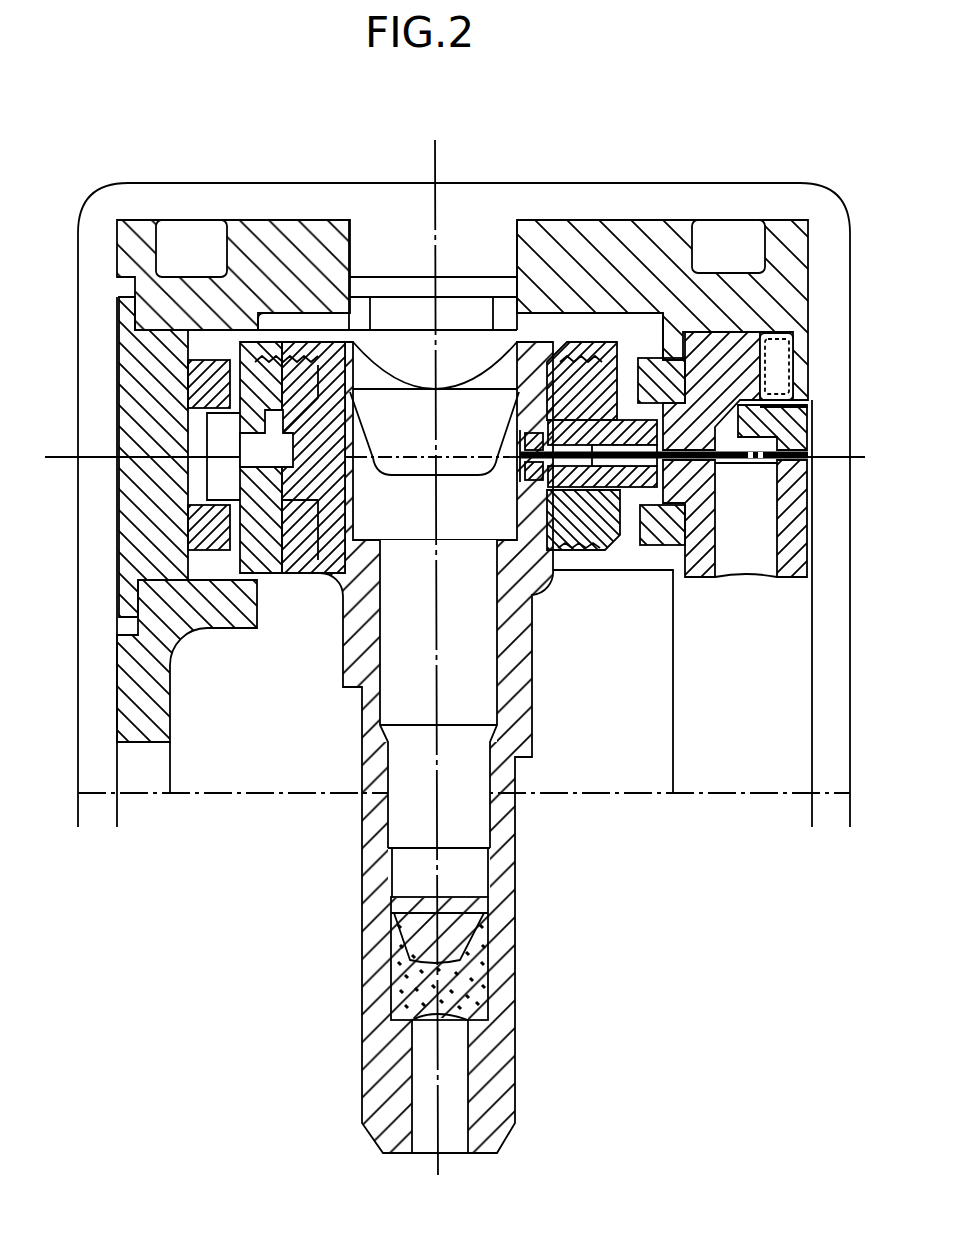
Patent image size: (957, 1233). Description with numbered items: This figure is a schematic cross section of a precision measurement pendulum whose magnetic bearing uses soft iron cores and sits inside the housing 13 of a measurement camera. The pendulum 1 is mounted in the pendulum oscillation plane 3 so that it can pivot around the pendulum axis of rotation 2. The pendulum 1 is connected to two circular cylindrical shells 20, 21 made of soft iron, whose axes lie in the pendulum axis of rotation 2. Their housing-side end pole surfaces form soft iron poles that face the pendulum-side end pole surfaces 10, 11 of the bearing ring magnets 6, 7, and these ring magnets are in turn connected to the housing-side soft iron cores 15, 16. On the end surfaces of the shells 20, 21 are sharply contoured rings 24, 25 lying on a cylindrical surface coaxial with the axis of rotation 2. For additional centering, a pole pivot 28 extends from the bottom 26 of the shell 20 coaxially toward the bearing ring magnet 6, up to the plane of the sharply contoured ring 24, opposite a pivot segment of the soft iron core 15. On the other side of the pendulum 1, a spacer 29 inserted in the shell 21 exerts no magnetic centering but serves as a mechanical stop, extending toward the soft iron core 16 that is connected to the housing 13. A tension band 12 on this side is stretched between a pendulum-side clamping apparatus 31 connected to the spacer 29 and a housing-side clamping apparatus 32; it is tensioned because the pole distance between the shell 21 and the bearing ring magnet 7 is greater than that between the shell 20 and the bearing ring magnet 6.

The pendulum 1 is at (510, 946).
The pendulum axis of rotation 2 is at (250, 458).
The pendulum oscillation plane 3 is at (436, 155).
The bearing ring magnet 6 is at (210, 378).
The bearing ring magnet 7 is at (672, 540).
The pendulum-side end pole surface 10 is at (230, 375).
The pendulum-side end pole surface 11 is at (640, 512).
The tension band 12 is at (760, 452).
The housing 13 is at (127, 680).
The soft iron core 15 is at (205, 526).
The soft iron core 16 is at (747, 326).
The circular cylindrical shell 20 is at (293, 528).
The circular cylindrical shell 21 is at (578, 548).
The sharply contoured ring 24 is at (238, 378).
The sharply contoured ring 25 is at (626, 530).
The bottom 26 is at (350, 428).
The pole pivot 28 is at (240, 440).
The spacer 29 is at (628, 422).
The pendulum-side clamping apparatus 31 is at (520, 463).
The housing-side clamping apparatus 32 is at (812, 460).